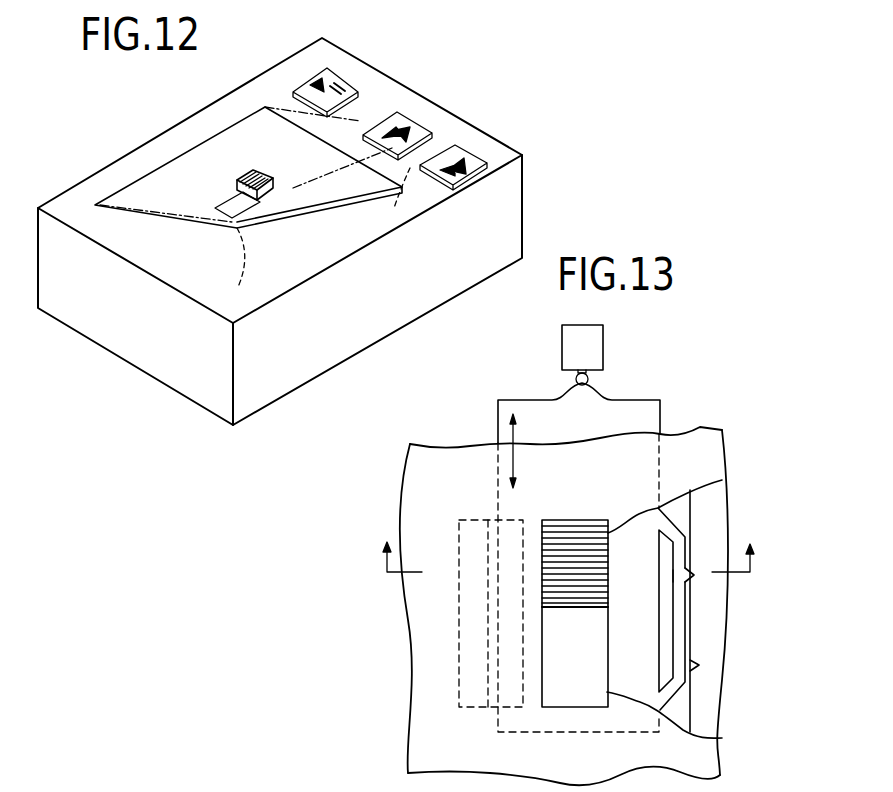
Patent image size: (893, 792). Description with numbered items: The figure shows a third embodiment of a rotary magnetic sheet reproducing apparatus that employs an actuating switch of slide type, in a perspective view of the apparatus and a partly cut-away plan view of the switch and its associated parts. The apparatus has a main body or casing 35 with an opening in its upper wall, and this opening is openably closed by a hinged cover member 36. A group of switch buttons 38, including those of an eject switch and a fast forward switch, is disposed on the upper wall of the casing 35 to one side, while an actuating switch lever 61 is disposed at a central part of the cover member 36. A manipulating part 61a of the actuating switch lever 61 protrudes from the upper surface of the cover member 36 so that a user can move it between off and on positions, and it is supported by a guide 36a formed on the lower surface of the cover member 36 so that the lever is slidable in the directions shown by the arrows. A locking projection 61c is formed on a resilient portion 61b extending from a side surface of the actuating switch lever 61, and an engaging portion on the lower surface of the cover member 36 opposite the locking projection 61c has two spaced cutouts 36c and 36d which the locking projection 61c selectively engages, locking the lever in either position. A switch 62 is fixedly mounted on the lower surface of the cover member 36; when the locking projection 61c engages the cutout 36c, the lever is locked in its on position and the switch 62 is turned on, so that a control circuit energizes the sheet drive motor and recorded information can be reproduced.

In FIG. 12, the casing 35 is at (92, 175).
In FIG. 12, the cover member 36 is at (172, 240).
In FIG. 13, the cover member 36 is at (442, 460).
In FIG. 13, the guide 36a is at (465, 683).
In FIG. 13, the cutout 36c is at (698, 572).
In FIG. 13, the cutout 36d is at (699, 665).
In FIG. 12, the group of switch buttons 38 is at (350, 87).
In FIG. 12, the actuating switch lever 61 is at (227, 178).
In FIG. 13, the actuating switch lever 61 is at (660, 400).
In FIG. 12, the manipulating part 61a is at (268, 172).
In FIG. 13, the manipulating part 61a is at (578, 528).
In FIG. 13, the resilient portion 61b is at (675, 523).
In FIG. 13, the locking projection 61c is at (687, 573).
In FIG. 13, the switch 62 is at (592, 347).